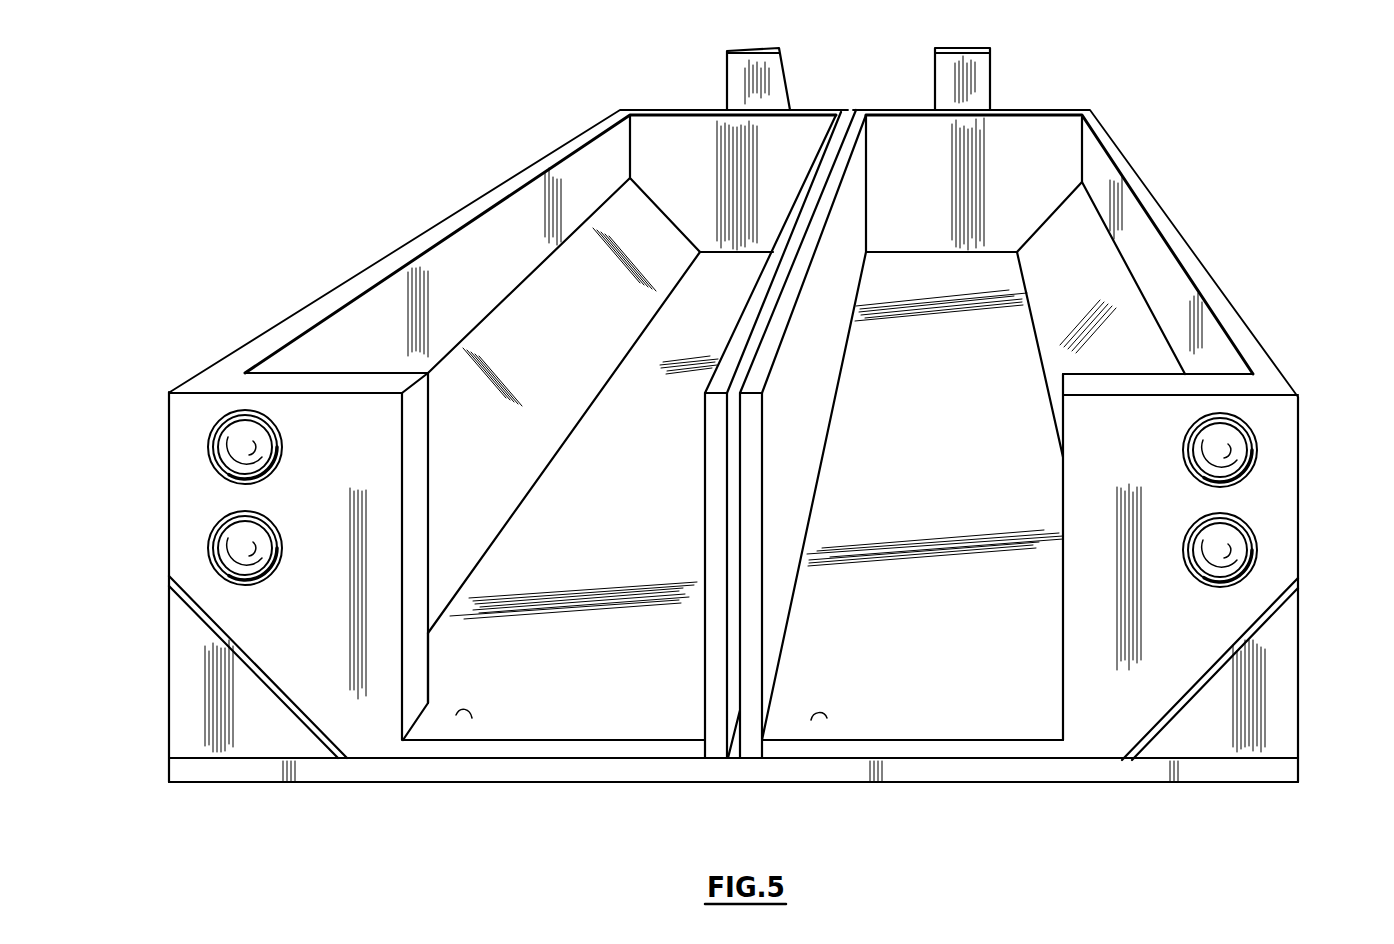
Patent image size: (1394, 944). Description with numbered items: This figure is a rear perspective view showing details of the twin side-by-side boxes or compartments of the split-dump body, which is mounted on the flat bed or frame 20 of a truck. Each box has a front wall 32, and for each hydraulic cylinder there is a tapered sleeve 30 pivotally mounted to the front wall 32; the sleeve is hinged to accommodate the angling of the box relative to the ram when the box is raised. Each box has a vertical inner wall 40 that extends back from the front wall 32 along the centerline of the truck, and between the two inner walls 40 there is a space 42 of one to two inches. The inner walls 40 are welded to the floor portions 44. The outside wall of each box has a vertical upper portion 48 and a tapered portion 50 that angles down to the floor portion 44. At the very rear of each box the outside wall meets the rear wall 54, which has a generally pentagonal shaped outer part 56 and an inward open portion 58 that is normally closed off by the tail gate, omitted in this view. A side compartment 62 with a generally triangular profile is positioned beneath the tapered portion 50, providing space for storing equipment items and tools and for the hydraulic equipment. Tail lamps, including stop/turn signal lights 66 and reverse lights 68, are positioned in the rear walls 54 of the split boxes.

The flat bed or frame 20 is at (1063, 778).
The tapered sleeve 30 is at (723, 93).
The front wall 32 is at (790, 147).
The vertical inner wall 40 is at (705, 540).
The space 42 is at (760, 345).
The floor portion 44 is at (603, 722).
The vertical upper portion 48 is at (458, 282).
The tapered portion 50 is at (488, 471).
The rear wall 54 is at (322, 366).
The pentagonal shaped outer part 56 is at (348, 408).
The inward open portion 58 is at (456, 715).
The side compartment 62 is at (188, 670).
The stop/turn signal lights 66 is at (207, 447).
The reverse lights 68 is at (207, 549).